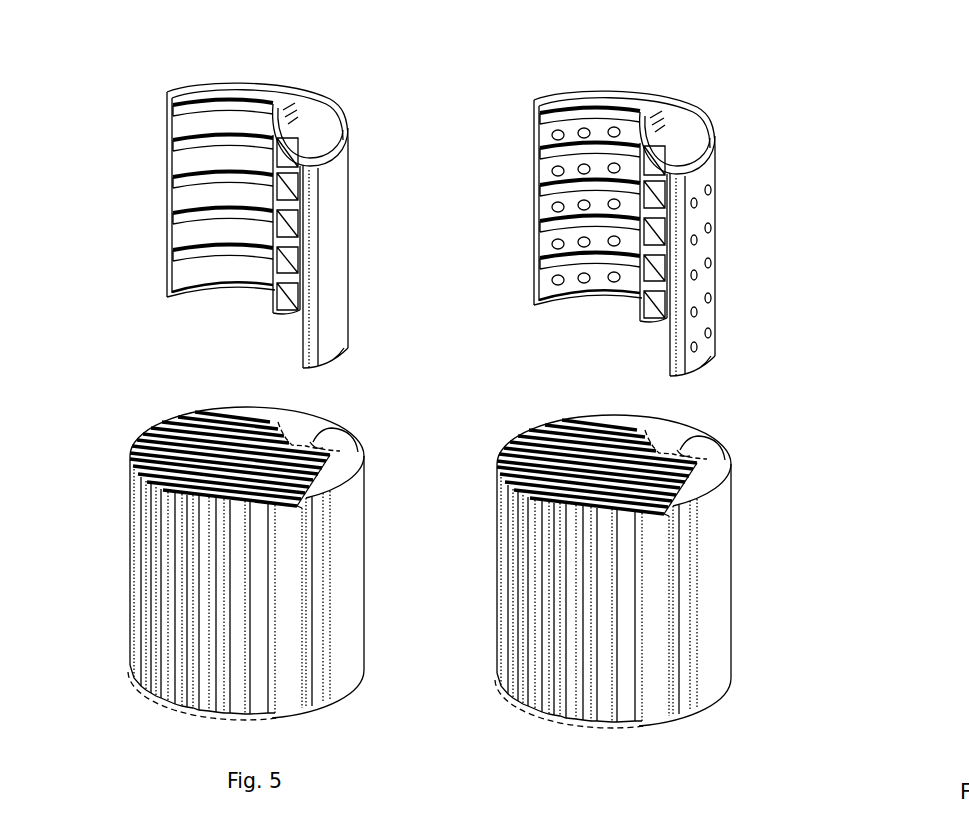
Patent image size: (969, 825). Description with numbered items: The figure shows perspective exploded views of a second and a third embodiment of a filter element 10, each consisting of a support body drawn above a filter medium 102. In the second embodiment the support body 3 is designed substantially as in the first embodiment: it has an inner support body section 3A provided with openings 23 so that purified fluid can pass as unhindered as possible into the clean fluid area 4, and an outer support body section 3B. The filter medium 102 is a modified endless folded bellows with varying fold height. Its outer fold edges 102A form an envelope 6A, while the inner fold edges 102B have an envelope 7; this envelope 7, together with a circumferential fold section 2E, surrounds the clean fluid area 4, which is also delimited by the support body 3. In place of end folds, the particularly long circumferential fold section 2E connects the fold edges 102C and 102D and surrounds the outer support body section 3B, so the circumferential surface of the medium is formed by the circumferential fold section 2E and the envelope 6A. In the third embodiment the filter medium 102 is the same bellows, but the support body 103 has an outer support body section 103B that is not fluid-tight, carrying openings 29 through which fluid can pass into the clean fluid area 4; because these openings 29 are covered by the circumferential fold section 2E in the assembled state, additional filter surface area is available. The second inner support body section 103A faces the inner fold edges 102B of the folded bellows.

In FIG. 5, the filter element 10 is at (113, 56).
In FIG. 6, the filter element 10 is at (606, 396).
In FIG. 5, the support body 3 is at (142, 222).
In FIG. 5, the inner support body section 3A is at (207, 290).
In FIG. 5, the outer support body section 3B is at (337, 200).
In FIG. 5, the clean fluid area 4 is at (308, 117).
In FIG. 6, the clean fluid area 4 is at (678, 123).
In FIG. 5, the openings 23 is at (307, 153).
In FIG. 6, the openings 23 is at (650, 255).
In FIG. 5, the filter medium 102 is at (140, 394).
In FIG. 6, the filter medium 102 is at (606, 550).
In FIG. 5, the outer fold edges 102A is at (144, 491).
In FIG. 6, the outer fold edges 102A is at (549, 571).
In FIG. 5, the inner fold edges 102B is at (330, 463).
In FIG. 6, the inner fold edges 102B is at (737, 484).
In FIG. 5, the fold edge 102C is at (168, 415).
In FIG. 6, the fold edge 102C is at (614, 418).
In FIG. 5, the fold edge 102D is at (312, 498).
In FIG. 6, the fold edge 102D is at (734, 534).
In FIG. 5, the circumferential fold section 2E is at (361, 438).
In FIG. 6, the circumferential fold section 2E is at (712, 440).
In FIG. 5, the envelope of the inner fold edges 7 is at (317, 440).
In FIG. 6, the envelope of the inner fold edges 7 is at (702, 424).
In FIG. 5, the envelope of the outer fold edges 6A is at (161, 701).
In FIG. 6, the envelope of the outer fold edges 6A is at (548, 715).
In FIG. 6, the support body 103 is at (641, 224).
In FIG. 6, the inner support body section 103A is at (588, 316).
In FIG. 6, the outer support body section 103B is at (734, 256).
In FIG. 6, the openings 29 is at (631, 239).